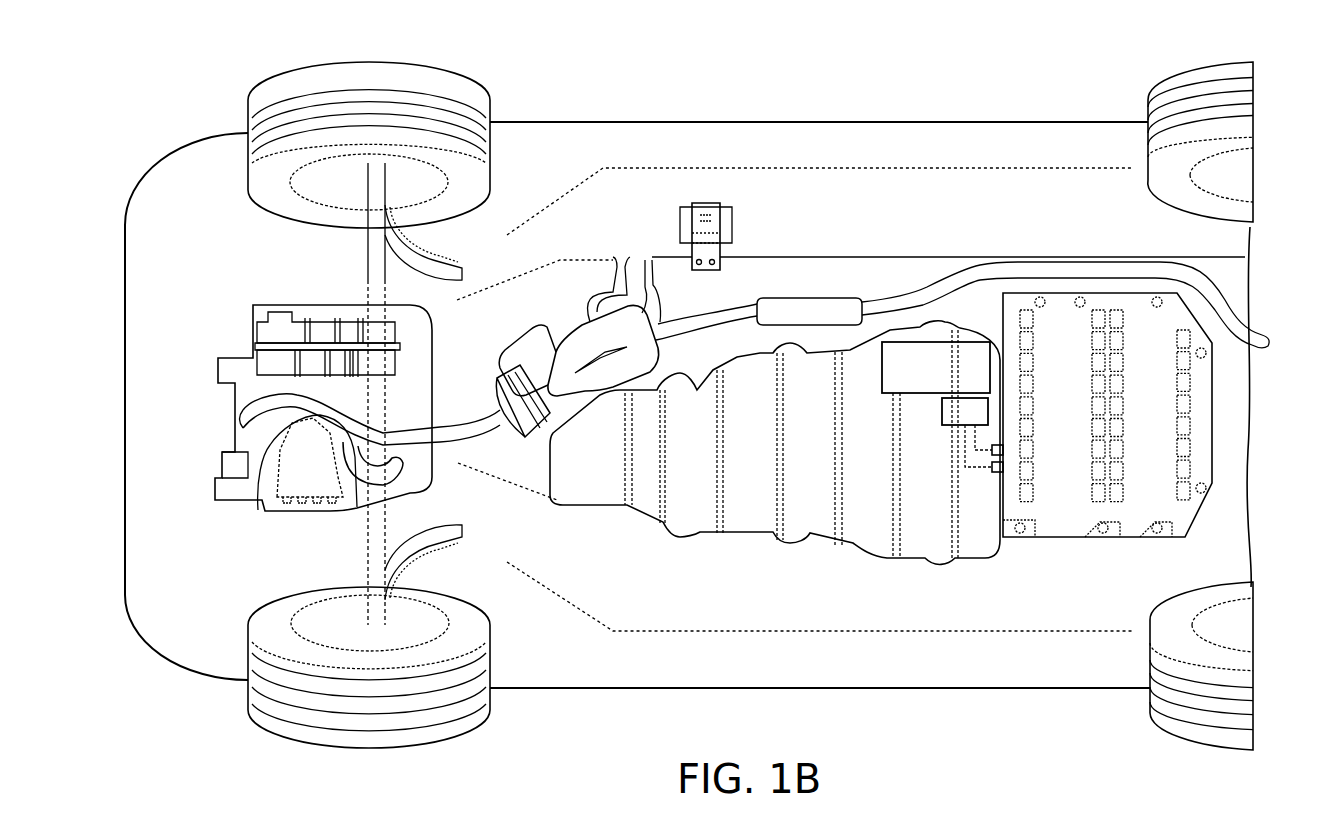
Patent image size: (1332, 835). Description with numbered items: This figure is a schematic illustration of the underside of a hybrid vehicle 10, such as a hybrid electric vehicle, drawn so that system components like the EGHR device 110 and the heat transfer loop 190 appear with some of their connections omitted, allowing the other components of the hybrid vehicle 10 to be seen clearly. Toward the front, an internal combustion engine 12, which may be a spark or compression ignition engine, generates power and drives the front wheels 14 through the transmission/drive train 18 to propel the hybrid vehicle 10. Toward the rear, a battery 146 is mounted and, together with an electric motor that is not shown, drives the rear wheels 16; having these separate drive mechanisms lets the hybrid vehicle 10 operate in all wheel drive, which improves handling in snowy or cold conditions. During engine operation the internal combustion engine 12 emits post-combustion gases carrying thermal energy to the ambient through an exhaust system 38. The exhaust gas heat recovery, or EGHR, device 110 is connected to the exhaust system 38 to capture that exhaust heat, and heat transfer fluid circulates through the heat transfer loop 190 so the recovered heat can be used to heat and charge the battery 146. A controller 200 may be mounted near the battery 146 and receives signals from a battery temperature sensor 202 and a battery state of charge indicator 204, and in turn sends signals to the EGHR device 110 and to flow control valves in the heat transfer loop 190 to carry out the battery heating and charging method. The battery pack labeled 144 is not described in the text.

The hybrid vehicle 10 is at (763, 62).
The internal combustion engine 12 is at (300, 490).
The front wheels 14 is at (305, 93).
The rear wheels 16 is at (1185, 105).
The transmission/drive train 18 is at (293, 330).
The exhaust system 38 is at (1264, 334).
The EGHR device 110 is at (572, 325).
The battery pack 144 is at (1107, 415).
The battery 146 is at (1046, 538).
The heat transfer loop 190 is at (936, 367).
The controller 200 is at (965, 411).
The battery temperature sensor 202 is at (1003, 450).
The battery state of charge indicator 204 is at (1003, 467).